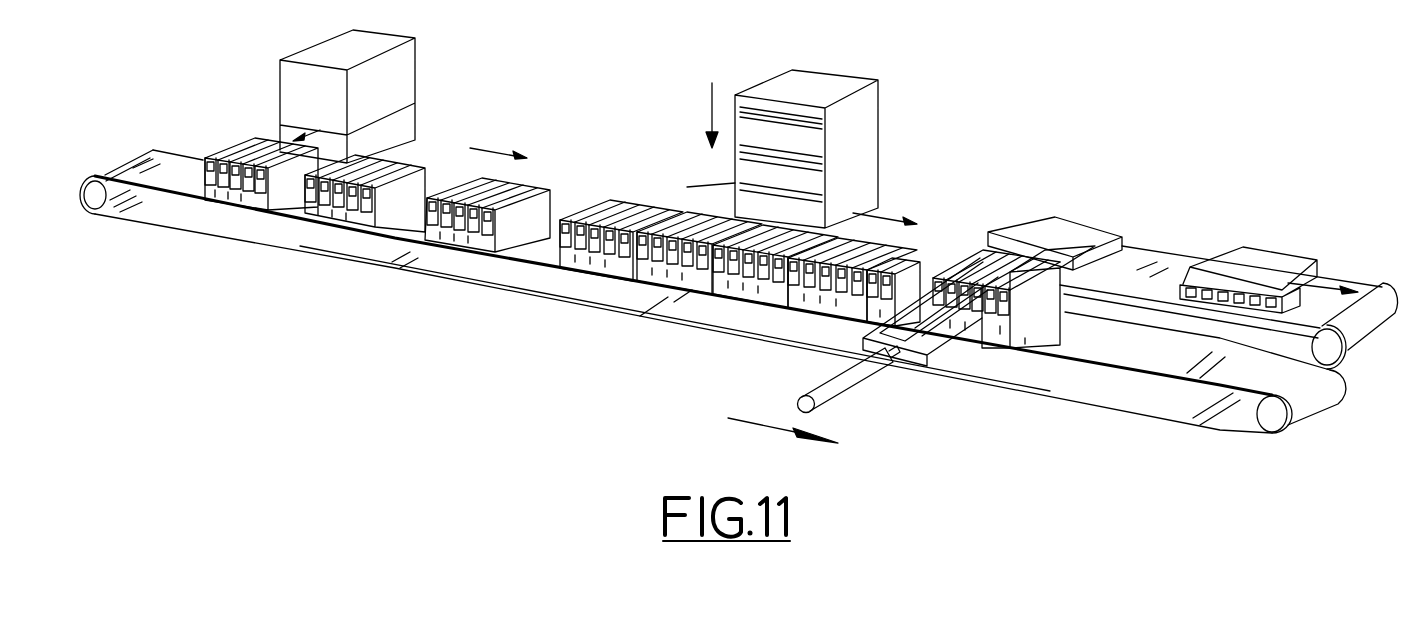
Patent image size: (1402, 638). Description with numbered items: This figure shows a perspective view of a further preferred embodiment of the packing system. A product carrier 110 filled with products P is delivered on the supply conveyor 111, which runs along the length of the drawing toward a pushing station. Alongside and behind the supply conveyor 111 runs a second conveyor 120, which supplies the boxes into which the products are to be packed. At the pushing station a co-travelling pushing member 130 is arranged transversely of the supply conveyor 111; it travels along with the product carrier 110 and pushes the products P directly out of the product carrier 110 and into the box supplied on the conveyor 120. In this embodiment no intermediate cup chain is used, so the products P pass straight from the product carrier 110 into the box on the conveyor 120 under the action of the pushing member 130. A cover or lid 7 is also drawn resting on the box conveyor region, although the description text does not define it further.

The supply conveyor 111 is at (418, 291).
The conveyor 120 is at (1196, 250).
The lid / cover plate 7 is at (1077, 229).
The products P is at (963, 265).
The product carrier 110 is at (1037, 307).
The co-travelling pushing member 130 is at (855, 387).